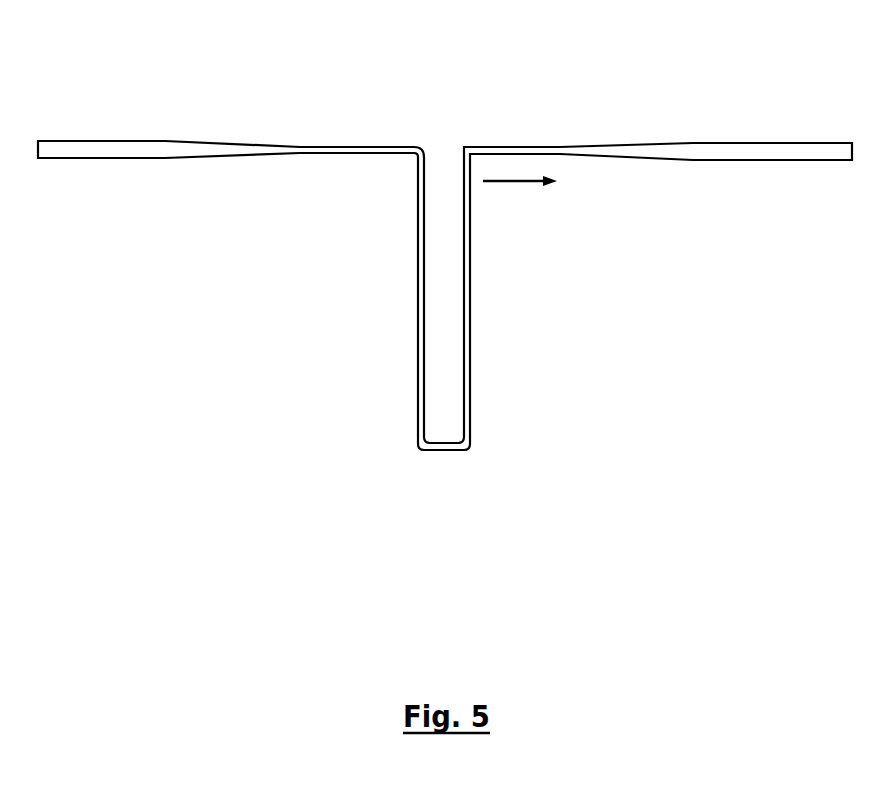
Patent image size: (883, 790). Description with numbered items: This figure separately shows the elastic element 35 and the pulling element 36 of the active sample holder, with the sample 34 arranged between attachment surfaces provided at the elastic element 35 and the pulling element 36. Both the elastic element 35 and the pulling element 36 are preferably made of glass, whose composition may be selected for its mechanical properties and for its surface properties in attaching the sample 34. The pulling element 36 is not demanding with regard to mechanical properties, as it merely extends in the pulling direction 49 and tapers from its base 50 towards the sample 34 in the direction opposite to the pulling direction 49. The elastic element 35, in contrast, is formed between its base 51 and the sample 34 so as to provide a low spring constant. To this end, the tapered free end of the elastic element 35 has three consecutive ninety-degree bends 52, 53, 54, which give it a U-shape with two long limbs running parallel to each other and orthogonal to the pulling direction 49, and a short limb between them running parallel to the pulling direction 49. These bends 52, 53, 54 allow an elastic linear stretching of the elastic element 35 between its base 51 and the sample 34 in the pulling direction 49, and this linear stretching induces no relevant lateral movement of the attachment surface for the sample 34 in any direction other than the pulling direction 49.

The sample 34 is at (473, 139).
The elastic element 35 is at (153, 137).
The pulling element 36 is at (782, 142).
The pulling direction 49 is at (513, 181).
The base of the pulling element 50 is at (832, 152).
The base of the elastic element 51 is at (73, 148).
The first 90° bend 52 is at (402, 172).
The second 90° bend 53 is at (422, 455).
The third 90° bend 54 is at (467, 457).